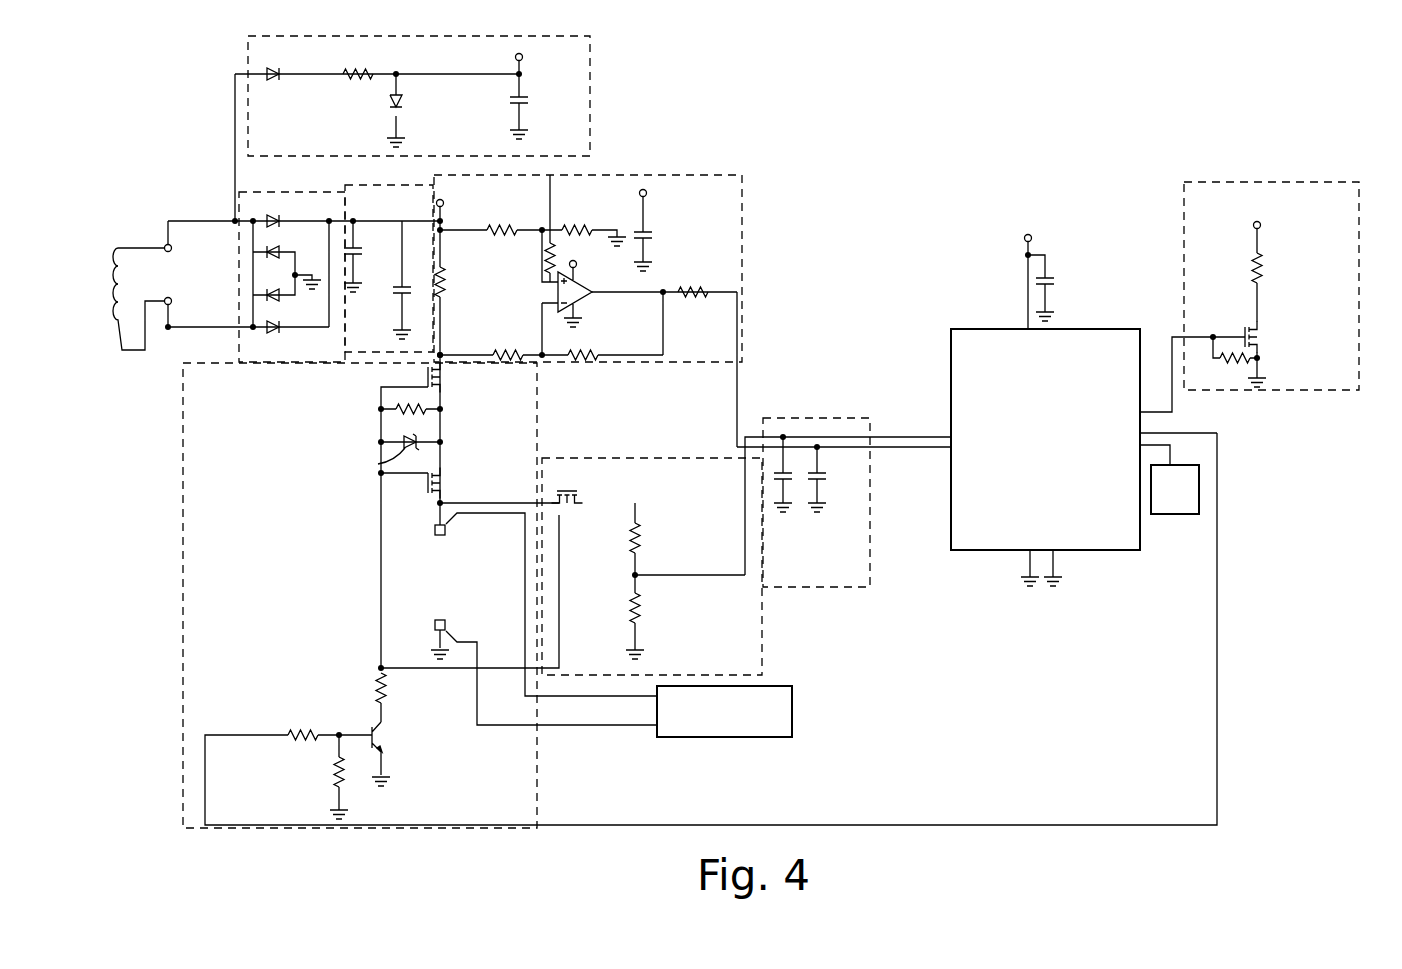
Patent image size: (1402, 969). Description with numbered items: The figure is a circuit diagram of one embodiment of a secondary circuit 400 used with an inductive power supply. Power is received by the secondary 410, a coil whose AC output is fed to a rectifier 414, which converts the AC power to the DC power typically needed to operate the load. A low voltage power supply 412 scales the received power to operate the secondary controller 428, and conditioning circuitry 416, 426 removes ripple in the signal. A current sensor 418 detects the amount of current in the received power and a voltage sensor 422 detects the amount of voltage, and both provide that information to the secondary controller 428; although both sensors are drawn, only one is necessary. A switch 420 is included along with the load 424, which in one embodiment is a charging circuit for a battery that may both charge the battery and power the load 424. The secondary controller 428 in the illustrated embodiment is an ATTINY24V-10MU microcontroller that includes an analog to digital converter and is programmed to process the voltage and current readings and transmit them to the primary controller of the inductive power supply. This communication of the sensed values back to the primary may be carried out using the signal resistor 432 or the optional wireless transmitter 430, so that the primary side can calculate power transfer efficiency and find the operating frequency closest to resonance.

The secondary circuit 400 is at (738, 432).
The secondary 410 is at (135, 233).
The low voltage power supply 412 is at (590, 69).
The rectifier 414 is at (267, 190).
The conditioning circuitry 416 is at (383, 186).
The current sensor 418 is at (680, 175).
The switch 420 is at (508, 792).
The voltage sensor 422 is at (762, 652).
The load 424 is at (792, 712).
The conditioning circuitry 426 is at (815, 418).
The secondary controller 428 is at (992, 552).
The wireless transmitter 430 is at (1170, 514).
The signal resistor 432 is at (1348, 392).